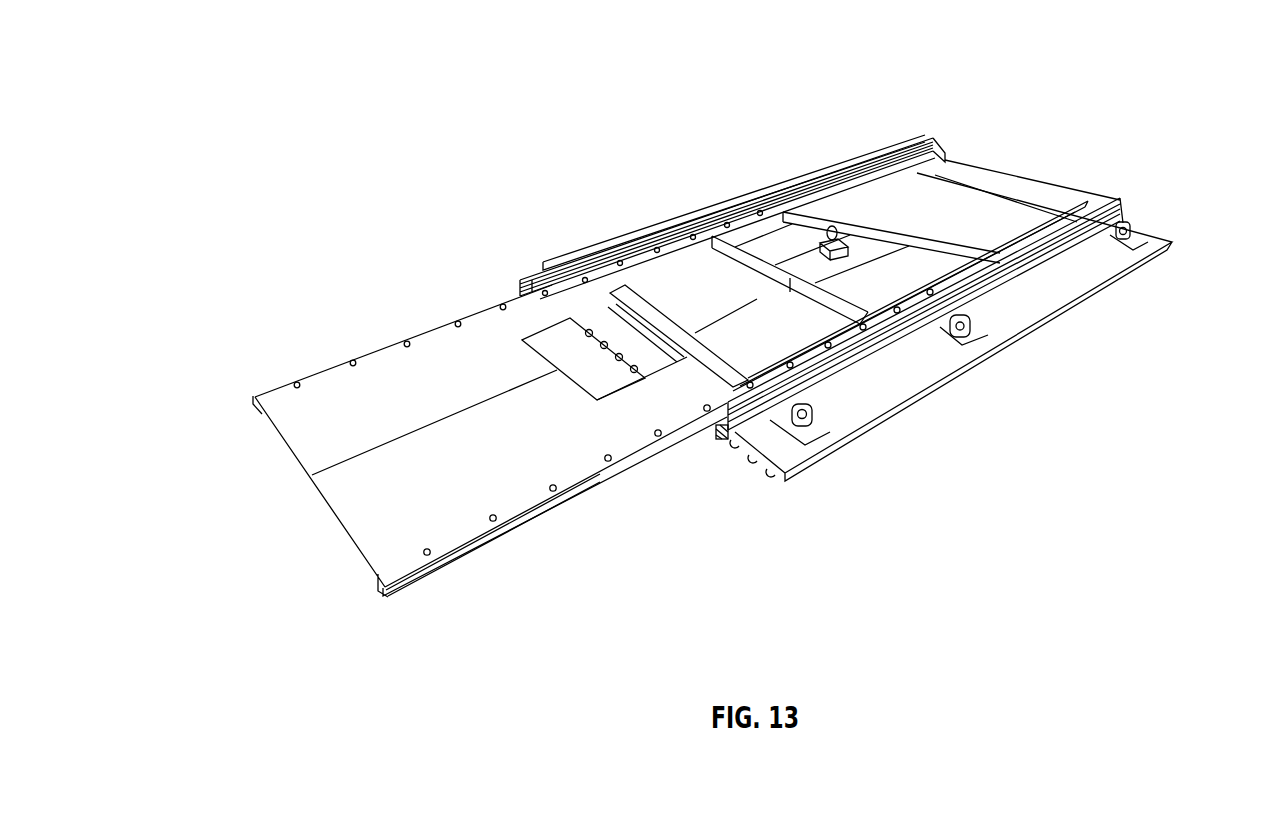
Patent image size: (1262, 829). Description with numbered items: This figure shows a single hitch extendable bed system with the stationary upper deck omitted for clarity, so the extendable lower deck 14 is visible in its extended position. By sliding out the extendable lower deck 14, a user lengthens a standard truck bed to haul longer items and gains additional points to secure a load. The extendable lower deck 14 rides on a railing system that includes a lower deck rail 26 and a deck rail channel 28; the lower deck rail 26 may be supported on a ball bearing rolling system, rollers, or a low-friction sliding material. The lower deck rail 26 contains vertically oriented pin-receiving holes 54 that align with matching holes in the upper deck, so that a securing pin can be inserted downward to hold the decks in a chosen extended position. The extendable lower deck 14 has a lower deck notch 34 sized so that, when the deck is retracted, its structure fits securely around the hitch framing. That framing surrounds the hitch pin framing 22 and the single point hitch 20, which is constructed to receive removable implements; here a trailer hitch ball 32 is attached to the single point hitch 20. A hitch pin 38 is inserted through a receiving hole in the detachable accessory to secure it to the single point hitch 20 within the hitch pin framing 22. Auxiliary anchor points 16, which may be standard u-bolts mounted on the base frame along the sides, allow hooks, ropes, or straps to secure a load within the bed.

The extendable lower deck 14 is at (345, 426).
The auxiliary anchor points 16 is at (968, 339).
The single point hitch 20 is at (797, 246).
The hitch pin framing 22 is at (853, 230).
The lower deck rail 26 is at (372, 599).
The deck rail channel 28 is at (716, 434).
The trailer hitch ball 32 is at (833, 221).
The lower deck notch 34 is at (567, 355).
The hitch pin 38 is at (852, 267).
The pin-receiving holes 54 is at (347, 356).